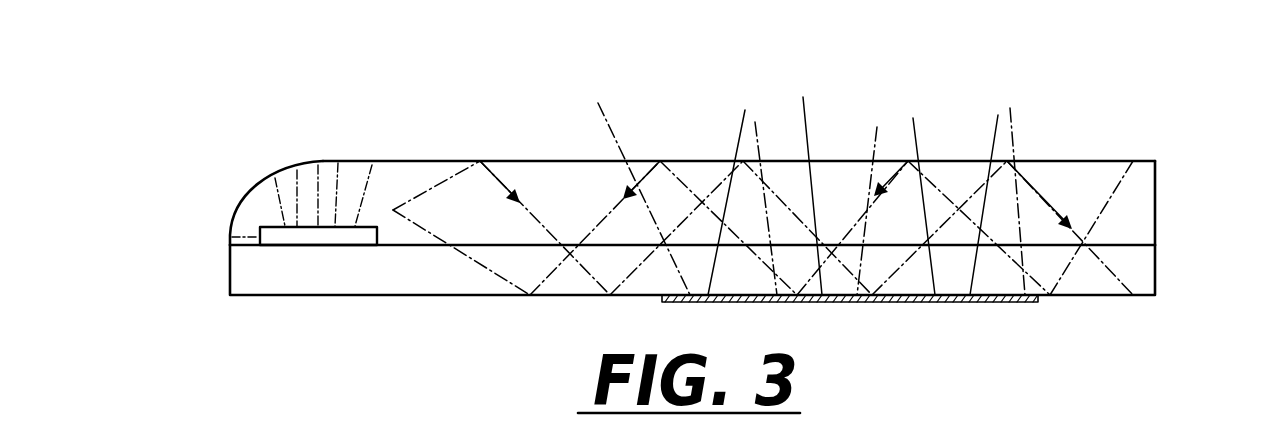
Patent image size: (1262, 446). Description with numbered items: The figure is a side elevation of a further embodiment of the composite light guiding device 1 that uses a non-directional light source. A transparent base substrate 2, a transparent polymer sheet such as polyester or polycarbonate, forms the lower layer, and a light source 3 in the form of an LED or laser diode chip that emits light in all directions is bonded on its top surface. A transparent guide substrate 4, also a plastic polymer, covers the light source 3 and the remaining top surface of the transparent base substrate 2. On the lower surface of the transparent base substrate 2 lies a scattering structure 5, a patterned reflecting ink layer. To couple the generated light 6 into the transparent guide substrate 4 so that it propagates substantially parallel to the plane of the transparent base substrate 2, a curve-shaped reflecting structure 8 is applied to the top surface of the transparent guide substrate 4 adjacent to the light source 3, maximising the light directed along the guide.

The composite light guiding device 1 is at (706, 196).
The transparent base substrate 2 is at (1145, 272).
The light source 3 is at (322, 235).
The transparent guide substrate 4 is at (706, 177).
The scattering structure 5 is at (957, 301).
The generated light 6 is at (808, 148).
The reflecting structure 8 is at (258, 196).